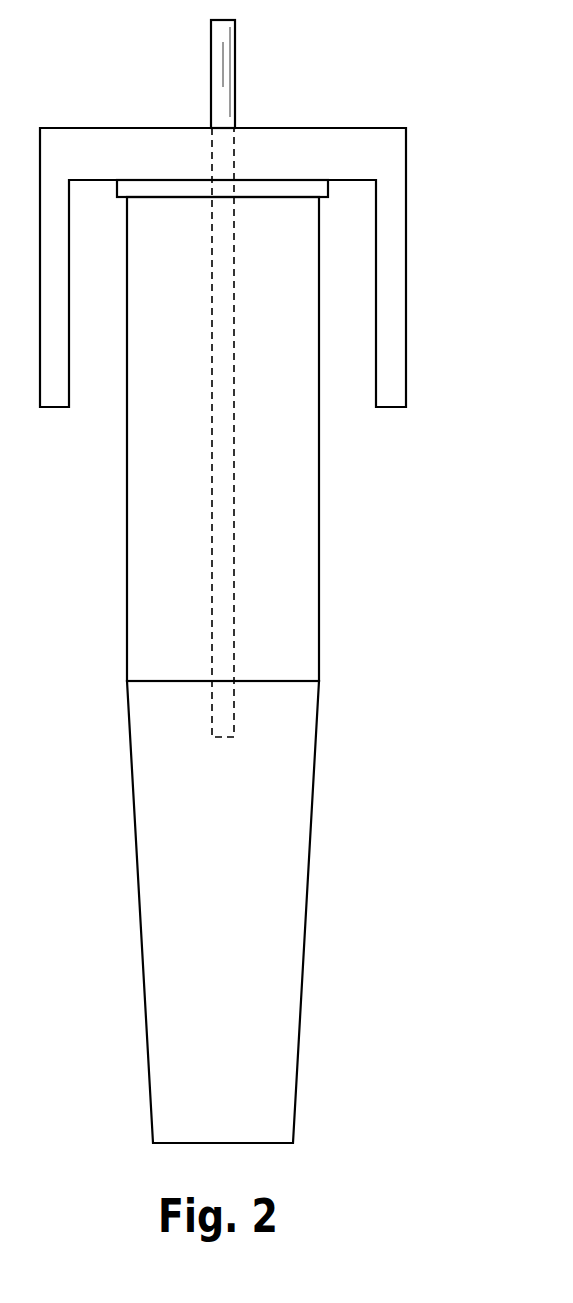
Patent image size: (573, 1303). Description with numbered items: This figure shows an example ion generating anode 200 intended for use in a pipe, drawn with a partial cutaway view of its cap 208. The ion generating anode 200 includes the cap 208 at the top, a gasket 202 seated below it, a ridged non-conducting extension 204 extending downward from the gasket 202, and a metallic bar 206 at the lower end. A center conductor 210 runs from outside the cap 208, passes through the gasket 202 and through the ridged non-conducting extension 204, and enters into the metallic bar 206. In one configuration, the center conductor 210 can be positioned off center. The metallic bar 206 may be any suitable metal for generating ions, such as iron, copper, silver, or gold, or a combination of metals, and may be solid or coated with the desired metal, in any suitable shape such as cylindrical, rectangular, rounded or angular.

The ion generating anode 200 is at (270, 576).
The gasket 202 is at (297, 190).
The ridged non-conducting extension 204 is at (319, 528).
The metallic bar 206 is at (308, 870).
The cap 208 is at (405, 217).
The center conductor 210 is at (211, 75).